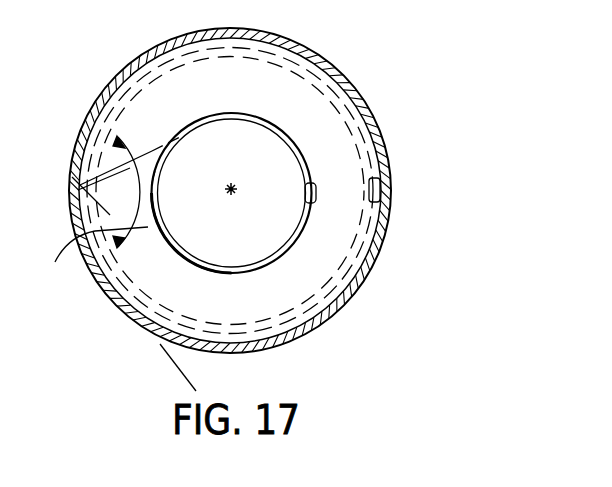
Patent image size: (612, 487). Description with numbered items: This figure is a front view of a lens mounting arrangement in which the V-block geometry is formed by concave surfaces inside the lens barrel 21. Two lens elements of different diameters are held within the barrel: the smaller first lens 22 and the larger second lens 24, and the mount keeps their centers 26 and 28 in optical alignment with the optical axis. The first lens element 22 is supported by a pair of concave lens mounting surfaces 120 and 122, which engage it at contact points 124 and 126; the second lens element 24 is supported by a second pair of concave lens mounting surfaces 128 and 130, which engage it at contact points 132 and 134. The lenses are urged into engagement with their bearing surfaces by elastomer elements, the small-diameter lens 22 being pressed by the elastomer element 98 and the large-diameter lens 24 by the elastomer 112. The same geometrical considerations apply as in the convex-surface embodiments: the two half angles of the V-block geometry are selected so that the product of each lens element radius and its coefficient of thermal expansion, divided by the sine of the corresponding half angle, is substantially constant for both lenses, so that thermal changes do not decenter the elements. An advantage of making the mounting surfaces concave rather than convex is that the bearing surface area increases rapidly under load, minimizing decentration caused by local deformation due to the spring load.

The lens barrel 21 is at (295, 38).
The first lens 22 is at (285, 171).
The second lens 24 is at (328, 238).
The center of first lens 26 is at (235, 193).
The center of second lens 28 is at (237, 187).
The elastomer element 98 is at (313, 189).
The elastomer 112 is at (380, 189).
The concave lens mounting surface 120 is at (162, 167).
The concave lens mounting surface 122 is at (159, 211).
The contact point 124 is at (192, 122).
The contact point 126 is at (185, 255).
The concave lens mounting surface 128 is at (228, 51).
The concave lens mounting surface 130 is at (202, 329).
The contact point 132 is at (126, 106).
The contact point 134 is at (118, 265).